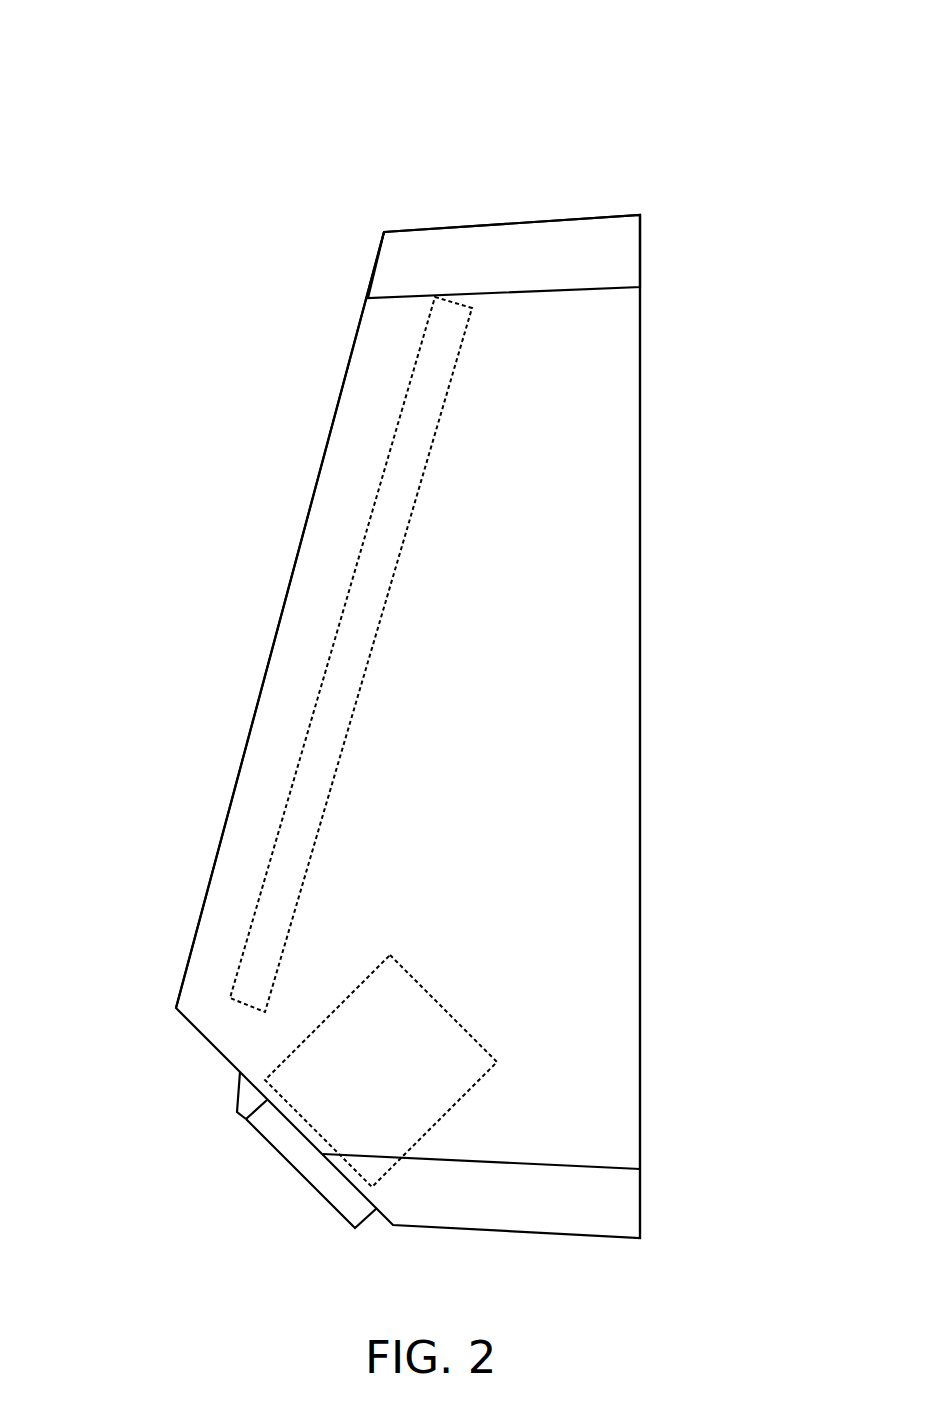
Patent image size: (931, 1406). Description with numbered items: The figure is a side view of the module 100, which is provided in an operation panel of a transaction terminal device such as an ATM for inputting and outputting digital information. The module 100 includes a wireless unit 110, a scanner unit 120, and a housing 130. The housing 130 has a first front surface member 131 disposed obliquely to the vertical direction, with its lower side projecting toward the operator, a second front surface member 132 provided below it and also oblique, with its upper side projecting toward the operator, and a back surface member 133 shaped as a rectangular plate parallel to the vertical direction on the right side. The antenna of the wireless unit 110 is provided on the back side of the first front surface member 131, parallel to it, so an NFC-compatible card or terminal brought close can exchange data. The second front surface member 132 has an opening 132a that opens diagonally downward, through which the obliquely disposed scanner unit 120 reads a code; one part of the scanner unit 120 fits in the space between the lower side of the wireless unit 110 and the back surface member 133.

The module 100 is at (452, 100).
The wireless unit 110 is at (398, 562).
The scanner unit 120 is at (458, 1022).
The housing 130 is at (630, 215).
The first front surface member 131 is at (275, 632).
The second front surface member 132 is at (215, 1047).
The opening 132a is at (285, 1160).
The back surface member 133 is at (641, 745).